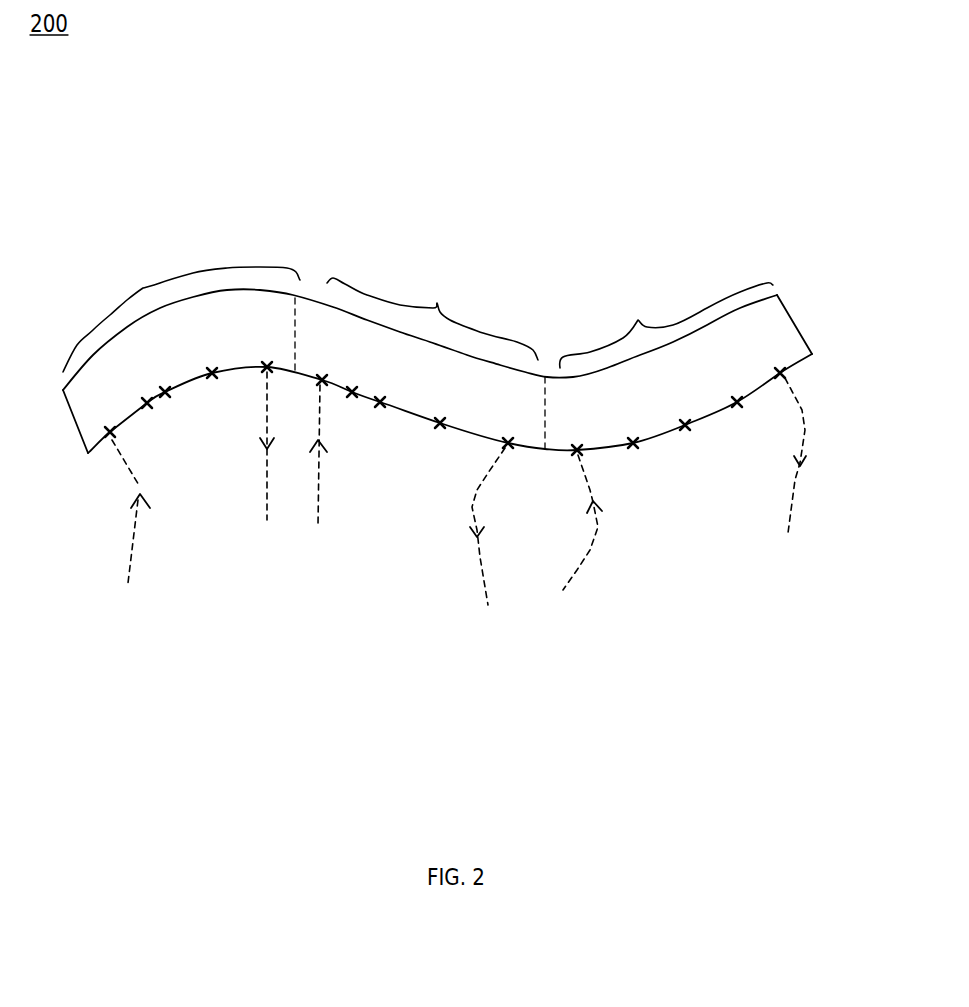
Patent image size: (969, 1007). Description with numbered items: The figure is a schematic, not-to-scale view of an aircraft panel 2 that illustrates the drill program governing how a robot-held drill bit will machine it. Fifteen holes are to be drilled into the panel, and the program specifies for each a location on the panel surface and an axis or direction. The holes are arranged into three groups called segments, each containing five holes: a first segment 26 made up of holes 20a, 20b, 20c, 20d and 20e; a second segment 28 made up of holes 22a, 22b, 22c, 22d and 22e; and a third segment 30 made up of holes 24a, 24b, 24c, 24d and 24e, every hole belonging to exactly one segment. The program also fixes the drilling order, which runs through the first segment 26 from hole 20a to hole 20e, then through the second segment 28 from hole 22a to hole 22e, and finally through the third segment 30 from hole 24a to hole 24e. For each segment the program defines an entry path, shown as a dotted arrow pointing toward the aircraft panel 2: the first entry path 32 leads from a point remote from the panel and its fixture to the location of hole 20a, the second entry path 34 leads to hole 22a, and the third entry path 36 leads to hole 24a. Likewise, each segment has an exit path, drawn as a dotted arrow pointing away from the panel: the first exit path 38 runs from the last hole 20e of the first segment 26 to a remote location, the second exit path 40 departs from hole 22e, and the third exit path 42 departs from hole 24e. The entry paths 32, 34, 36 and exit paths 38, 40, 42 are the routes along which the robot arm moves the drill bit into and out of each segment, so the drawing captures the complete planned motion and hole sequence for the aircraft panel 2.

The aircraft panel 2 is at (793, 318).
The first segment 26 is at (181, 315).
The second segment 28 is at (436, 362).
The third segment 30 is at (666, 325).
The first hole of the first segment 20a is at (110, 428).
The second hole of the first segment 20b is at (147, 399).
The third hole of the first segment 20c is at (165, 388).
The fourth hole of the first segment 20d is at (212, 369).
The fifth hole of the first segment 20e is at (267, 363).
The first hole of the second segment 22a is at (322, 376).
The second hole of the second segment 22b is at (352, 388).
The third hole of the second segment 22c is at (380, 398).
The fourth hole of the second segment 22d is at (440, 419).
The fifth hole of the second segment 22e is at (508, 439).
The first hole of the third segment 24a is at (577, 446).
The second hole of the third segment 24b is at (633, 439).
The third hole of the third segment 24c is at (685, 421).
The fourth hole of the third segment 24d is at (737, 398).
The fifth hole of the third segment 24e is at (780, 369).
The first entry path 32 is at (132, 558).
The second entry path 34 is at (318, 490).
The third entry path 36 is at (577, 570).
The first exit path 38 is at (268, 493).
The second exit path 40 is at (485, 583).
The third exit path 42 is at (792, 508).